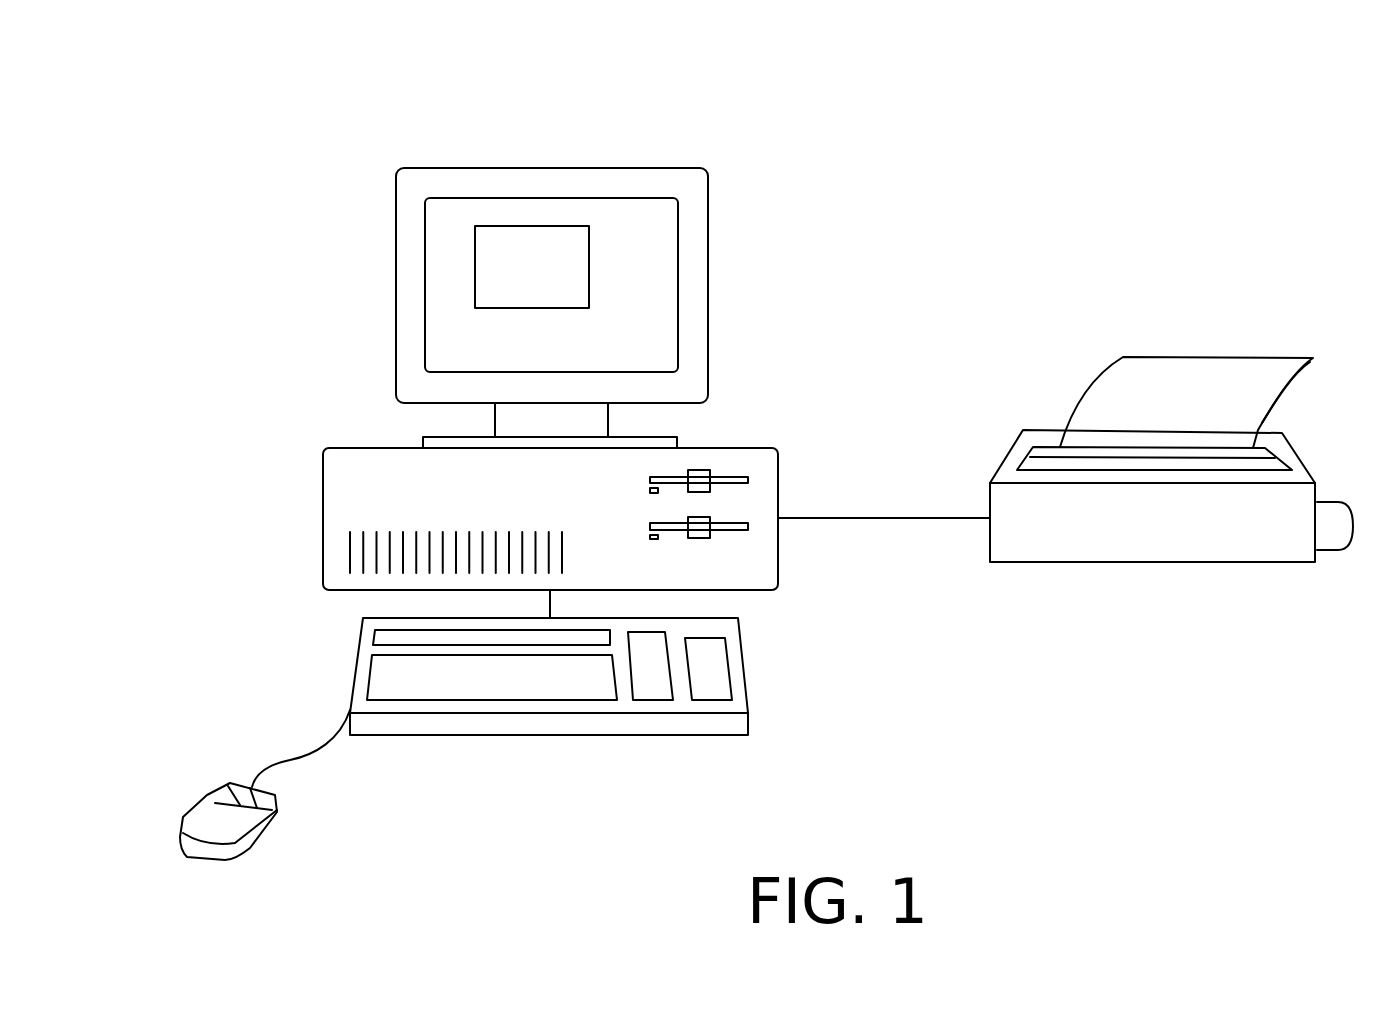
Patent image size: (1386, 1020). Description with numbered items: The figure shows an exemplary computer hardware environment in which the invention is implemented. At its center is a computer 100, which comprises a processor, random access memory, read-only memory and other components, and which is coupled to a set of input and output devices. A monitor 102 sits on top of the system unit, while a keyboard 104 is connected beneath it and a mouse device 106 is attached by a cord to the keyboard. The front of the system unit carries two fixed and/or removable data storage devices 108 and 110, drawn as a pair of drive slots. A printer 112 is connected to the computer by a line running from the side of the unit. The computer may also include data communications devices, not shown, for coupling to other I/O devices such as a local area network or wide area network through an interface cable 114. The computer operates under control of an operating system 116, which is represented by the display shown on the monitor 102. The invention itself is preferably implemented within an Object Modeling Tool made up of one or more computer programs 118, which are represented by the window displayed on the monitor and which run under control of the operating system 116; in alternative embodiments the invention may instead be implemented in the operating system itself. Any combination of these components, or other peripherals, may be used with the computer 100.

The computer 100 is at (716, 99).
The monitor 102 is at (397, 285).
The keyboard 104 is at (705, 728).
The mouse device 106 is at (207, 820).
The data storage device 108 is at (747, 478).
The data storage device 110 is at (733, 530).
The printer 112 is at (1113, 558).
The interface cable 114 is at (743, 448).
The operating system 116 is at (427, 225).
The computer programs 118 is at (557, 226).